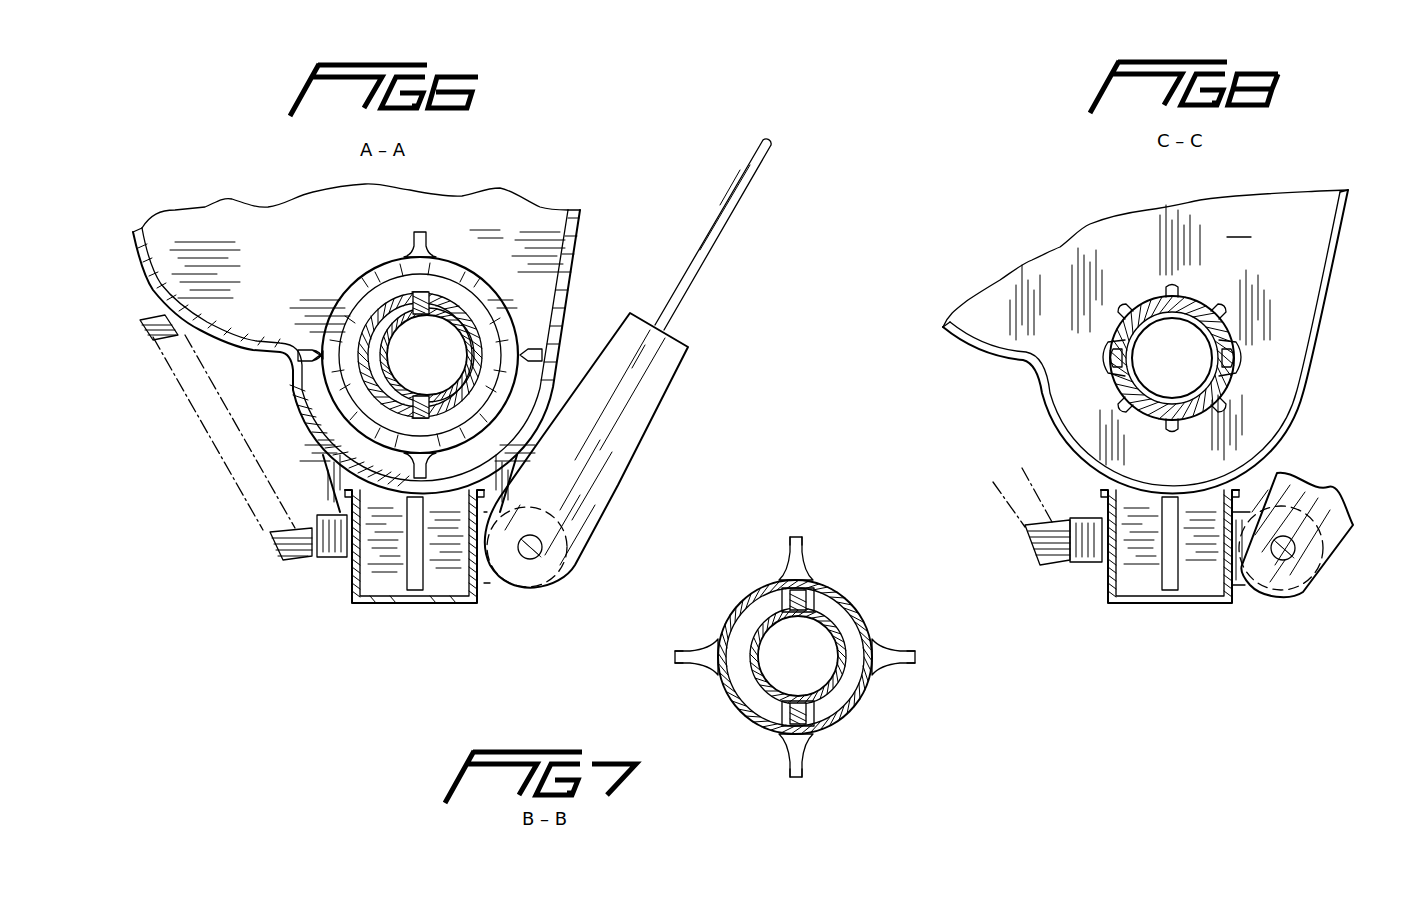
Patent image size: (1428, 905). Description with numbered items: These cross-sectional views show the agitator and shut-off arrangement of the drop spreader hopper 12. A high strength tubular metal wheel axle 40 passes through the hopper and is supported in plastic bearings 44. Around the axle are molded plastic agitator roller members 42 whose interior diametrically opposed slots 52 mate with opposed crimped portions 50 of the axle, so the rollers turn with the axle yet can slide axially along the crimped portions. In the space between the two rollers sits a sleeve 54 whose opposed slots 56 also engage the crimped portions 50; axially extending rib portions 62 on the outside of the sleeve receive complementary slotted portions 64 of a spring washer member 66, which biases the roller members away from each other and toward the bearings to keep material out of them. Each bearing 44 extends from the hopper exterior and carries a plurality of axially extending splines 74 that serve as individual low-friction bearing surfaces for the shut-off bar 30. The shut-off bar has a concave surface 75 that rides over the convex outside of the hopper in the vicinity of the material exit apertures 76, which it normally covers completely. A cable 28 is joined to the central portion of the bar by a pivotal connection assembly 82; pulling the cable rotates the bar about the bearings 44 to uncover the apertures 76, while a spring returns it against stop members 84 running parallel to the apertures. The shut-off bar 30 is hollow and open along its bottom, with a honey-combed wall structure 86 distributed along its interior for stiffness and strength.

In FIG. 6, the hopper 12 is at (356, 348).
In FIG. 8, the hopper 12 is at (1145, 341).
In FIG. 6, the cable 28 is at (735, 215).
In FIG. 6, the shut-off bar 30 is at (352, 560).
In FIG. 8, the shut-off bar 30 is at (1118, 560).
In FIG. 6, the tubular metal wheel axle 40 is at (383, 352).
In FIG. 7, the tubular metal wheel axle 40 is at (840, 672).
In FIG. 8, the tubular metal wheel axle 40 is at (1150, 372).
In FIG. 7, the agitator roller member 42 is at (870, 620).
In FIG. 8, the bearing 44 is at (1230, 348).
In FIG. 6, the crimped portion 50 is at (420, 312).
In FIG. 7, the crimped portion 50 is at (732, 566).
In FIG. 7, the slot 52 is at (806, 588).
In FIG. 6, the sleeve 54 is at (455, 318).
In FIG. 6, the slot 56 is at (405, 298).
In FIG. 6, the rib portion 62 is at (412, 290).
In FIG. 6, the slotted portion 64 is at (430, 292).
In FIG. 6, the spring washer member 66 is at (520, 345).
In FIG. 8, the spline 74 is at (1228, 312).
In FIG. 6, the concave surface 75 is at (452, 500).
In FIG. 8, the concave surface 75 is at (1200, 505).
In FIG. 6, the material exit aperture 76 is at (397, 490).
In FIG. 6, the pivotal connection assembly 82 is at (602, 549).
In FIG. 8, the pivotal connection assembly 82 is at (1345, 540).
In FIG. 6, the stop member 84 is at (148, 335).
In FIG. 8, the stop member 84 is at (1038, 545).
In FIG. 6, the honey-combed wall structure 86 is at (420, 560).
In FIG. 8, the honey-combed wall structure 86 is at (1170, 580).